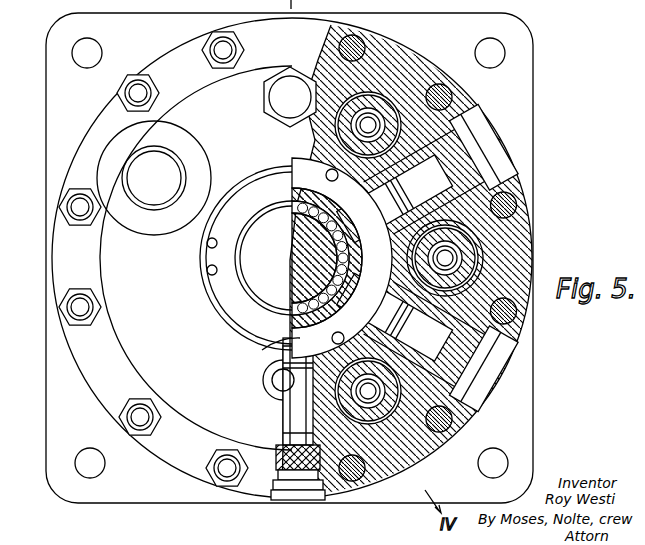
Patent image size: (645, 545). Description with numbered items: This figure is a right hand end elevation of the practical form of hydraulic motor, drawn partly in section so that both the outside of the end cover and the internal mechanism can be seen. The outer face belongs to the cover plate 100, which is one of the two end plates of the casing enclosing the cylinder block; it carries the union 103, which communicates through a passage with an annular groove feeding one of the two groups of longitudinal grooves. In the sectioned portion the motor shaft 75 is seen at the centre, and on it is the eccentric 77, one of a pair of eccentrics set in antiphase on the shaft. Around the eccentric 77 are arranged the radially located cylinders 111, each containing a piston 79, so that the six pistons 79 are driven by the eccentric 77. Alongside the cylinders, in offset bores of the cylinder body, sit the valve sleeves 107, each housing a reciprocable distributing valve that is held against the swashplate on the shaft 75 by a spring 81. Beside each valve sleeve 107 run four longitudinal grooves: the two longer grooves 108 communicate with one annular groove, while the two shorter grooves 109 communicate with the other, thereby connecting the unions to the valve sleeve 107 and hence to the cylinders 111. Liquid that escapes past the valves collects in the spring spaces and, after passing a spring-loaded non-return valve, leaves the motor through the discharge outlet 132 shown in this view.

The cover plate 100 is at (62, 258).
The union 103 is at (175, 165).
The longitudinal grooves 109 is at (345, 143).
The piston 79 is at (405, 170).
The cylinders 111 is at (463, 143).
The shaft 75 is at (305, 287).
The eccentric 77 is at (277, 334).
The discharge outlet 132 is at (272, 380).
The longitudinal grooves 108 is at (395, 140).
The valve sleeve 107 is at (448, 258).
The spring 81 is at (470, 242).